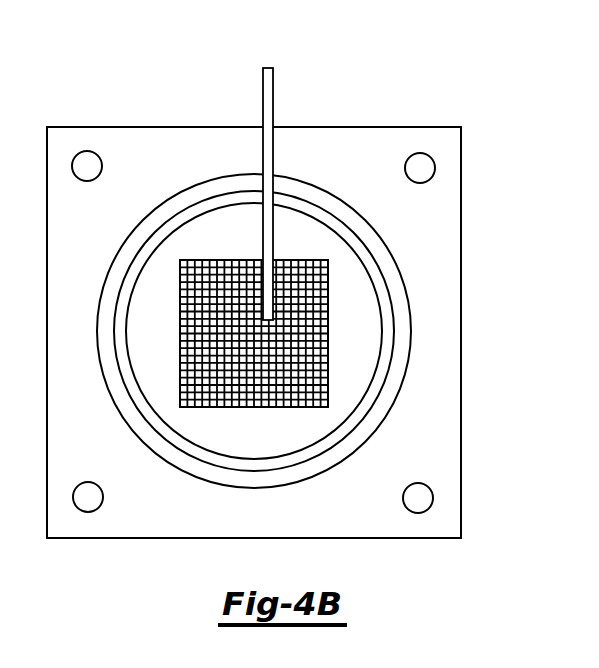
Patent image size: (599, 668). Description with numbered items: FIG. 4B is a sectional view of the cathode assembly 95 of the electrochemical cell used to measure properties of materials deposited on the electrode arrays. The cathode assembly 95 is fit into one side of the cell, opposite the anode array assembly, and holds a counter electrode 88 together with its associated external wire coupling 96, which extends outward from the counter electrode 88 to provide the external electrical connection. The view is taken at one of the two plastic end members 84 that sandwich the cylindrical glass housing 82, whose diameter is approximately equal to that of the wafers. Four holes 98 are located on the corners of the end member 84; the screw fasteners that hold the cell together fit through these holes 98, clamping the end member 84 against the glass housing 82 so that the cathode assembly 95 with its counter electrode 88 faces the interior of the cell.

The cylindrical glass housing 82 is at (392, 370).
The plastic end member 84 is at (358, 510).
The counter electrode 88 is at (312, 316).
The cathode assembly 95 is at (157, 126).
The external wire coupling 96 is at (274, 90).
The hole 98 is at (418, 157).